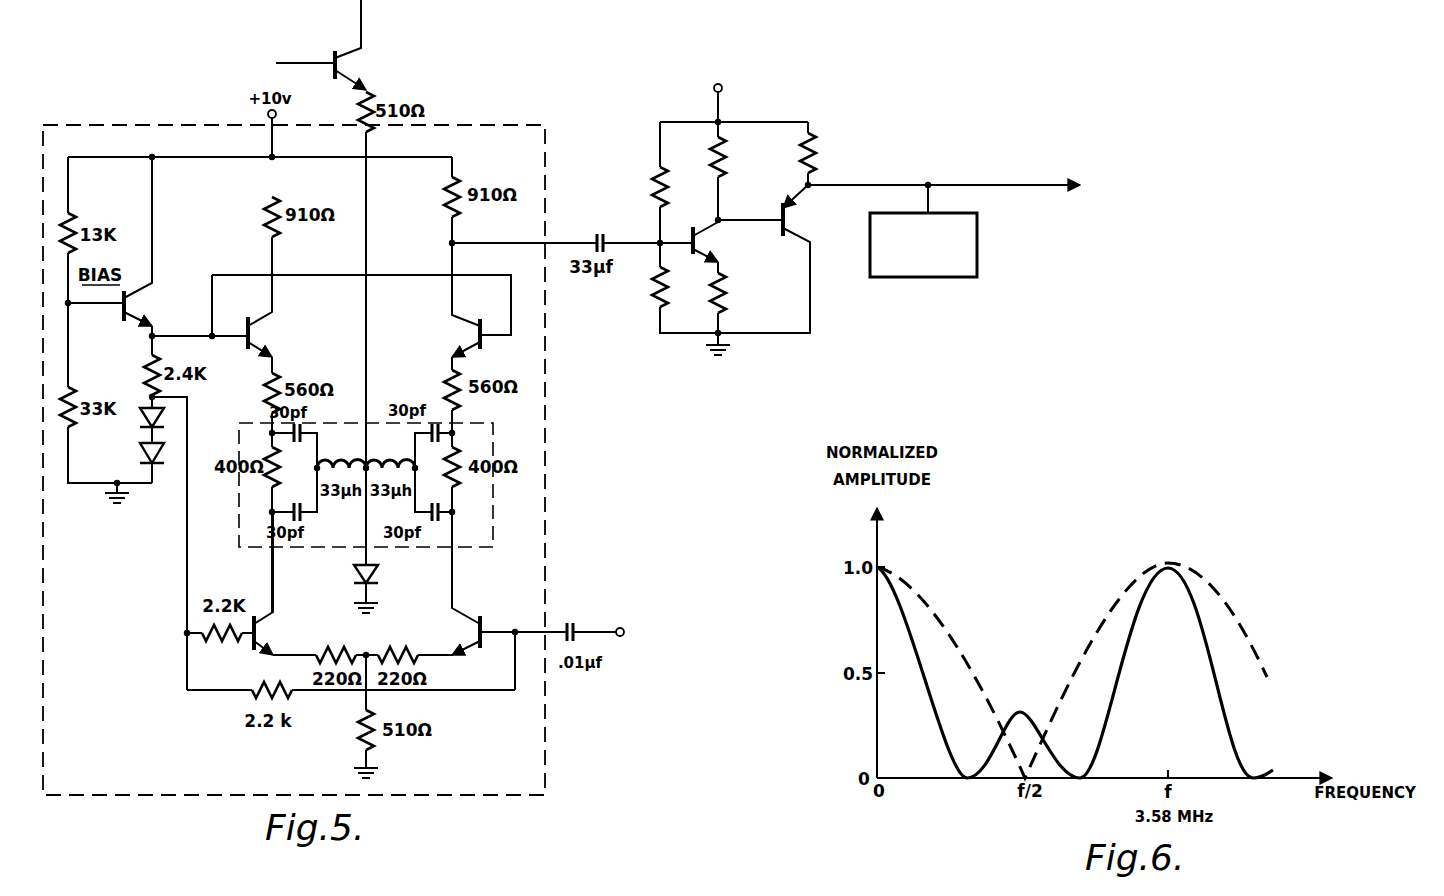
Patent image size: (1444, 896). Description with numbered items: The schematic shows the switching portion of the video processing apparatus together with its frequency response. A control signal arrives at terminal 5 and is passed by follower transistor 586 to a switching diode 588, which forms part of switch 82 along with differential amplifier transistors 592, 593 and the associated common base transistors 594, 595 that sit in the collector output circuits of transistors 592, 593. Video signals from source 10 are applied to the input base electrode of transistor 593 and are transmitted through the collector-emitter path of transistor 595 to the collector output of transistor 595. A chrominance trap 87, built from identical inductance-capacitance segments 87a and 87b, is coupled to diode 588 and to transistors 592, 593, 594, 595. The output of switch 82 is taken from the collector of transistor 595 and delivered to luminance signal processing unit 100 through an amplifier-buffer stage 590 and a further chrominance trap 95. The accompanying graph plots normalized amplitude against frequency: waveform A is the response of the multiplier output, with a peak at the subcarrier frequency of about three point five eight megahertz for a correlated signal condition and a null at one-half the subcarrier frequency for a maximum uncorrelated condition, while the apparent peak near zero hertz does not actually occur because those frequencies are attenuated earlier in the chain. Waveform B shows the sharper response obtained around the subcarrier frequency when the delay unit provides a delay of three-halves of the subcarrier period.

In FIG. 5, the terminal 5 is at (286, 63).
In FIG. 5, the follower transistor 586 is at (396, 74).
In FIG. 5, the switch 82 is at (508, 122).
In FIG. 5, the chrominance trap 87 is at (493, 548).
In FIG. 5, the inductance-capacitance segment 87a is at (393, 452).
In FIG. 5, the inductance-capacitance segment 87b is at (344, 452).
In FIG. 5, the switching diode 588 is at (380, 577).
In FIG. 5, the differential amplifier transistor 592 is at (271, 641).
In FIG. 5, the differential amplifier transistor 593 is at (437, 641).
In FIG. 5, the common base transistor 594 is at (268, 343).
In FIG. 5, the common base transistor 595 is at (428, 343).
In FIG. 5, the amplifier-buffer stage 590 is at (704, 416).
In FIG. 5, the chrominance trap 95 is at (930, 278).
In FIG. 5, the luminance signal processing unit 100 is at (1016, 183).
In FIG. 5, the source 10 is at (659, 631).
In FIG. 6, the waveform A is at (1237, 617).
In FIG. 6, the waveform B is at (1212, 712).